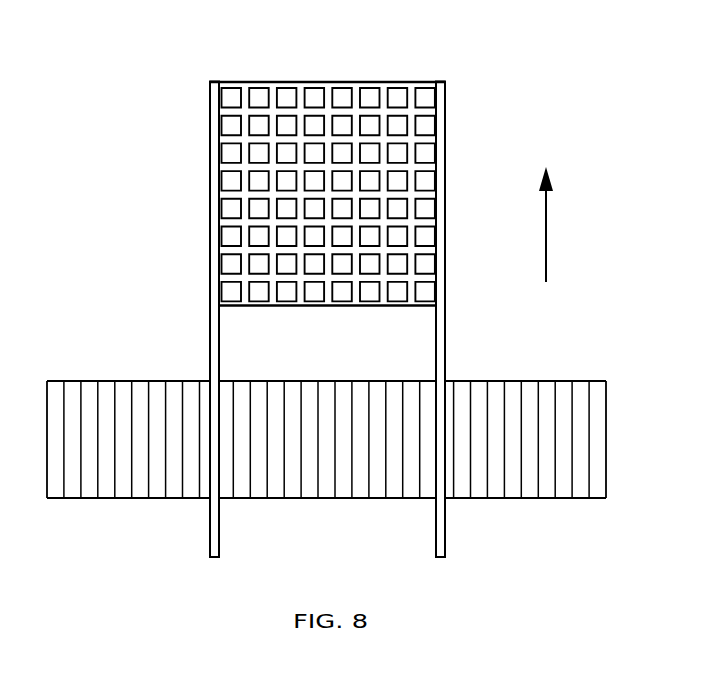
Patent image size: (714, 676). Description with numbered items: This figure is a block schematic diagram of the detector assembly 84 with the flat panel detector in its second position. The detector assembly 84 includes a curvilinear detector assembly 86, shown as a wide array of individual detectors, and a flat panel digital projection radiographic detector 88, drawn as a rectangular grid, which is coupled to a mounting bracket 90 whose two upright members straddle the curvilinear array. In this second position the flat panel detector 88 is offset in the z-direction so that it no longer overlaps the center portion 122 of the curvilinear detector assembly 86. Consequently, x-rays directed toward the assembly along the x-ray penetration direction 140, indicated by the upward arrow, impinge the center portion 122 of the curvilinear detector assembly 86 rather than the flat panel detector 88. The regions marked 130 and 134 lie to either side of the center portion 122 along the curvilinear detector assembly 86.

The detector assembly 84 is at (70, 180).
The curvilinear detector assembly 86 is at (105, 381).
The flat panel digital projection radiographic detector 88 is at (287, 81).
The mounting bracket 90 is at (210, 138).
The center portion 122 is at (307, 515).
The left flow zone 130 is at (121, 515).
The right flow zone 134 is at (531, 515).
The x-ray penetration direction 140 is at (547, 202).